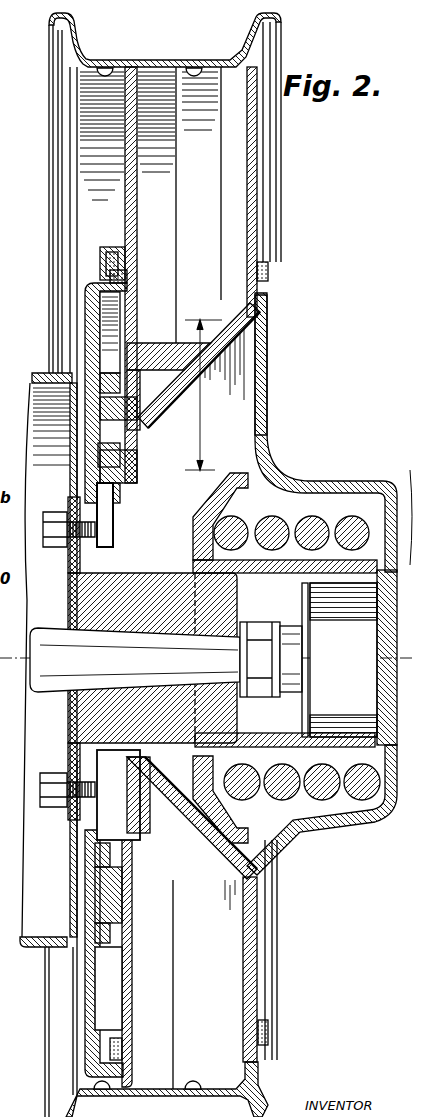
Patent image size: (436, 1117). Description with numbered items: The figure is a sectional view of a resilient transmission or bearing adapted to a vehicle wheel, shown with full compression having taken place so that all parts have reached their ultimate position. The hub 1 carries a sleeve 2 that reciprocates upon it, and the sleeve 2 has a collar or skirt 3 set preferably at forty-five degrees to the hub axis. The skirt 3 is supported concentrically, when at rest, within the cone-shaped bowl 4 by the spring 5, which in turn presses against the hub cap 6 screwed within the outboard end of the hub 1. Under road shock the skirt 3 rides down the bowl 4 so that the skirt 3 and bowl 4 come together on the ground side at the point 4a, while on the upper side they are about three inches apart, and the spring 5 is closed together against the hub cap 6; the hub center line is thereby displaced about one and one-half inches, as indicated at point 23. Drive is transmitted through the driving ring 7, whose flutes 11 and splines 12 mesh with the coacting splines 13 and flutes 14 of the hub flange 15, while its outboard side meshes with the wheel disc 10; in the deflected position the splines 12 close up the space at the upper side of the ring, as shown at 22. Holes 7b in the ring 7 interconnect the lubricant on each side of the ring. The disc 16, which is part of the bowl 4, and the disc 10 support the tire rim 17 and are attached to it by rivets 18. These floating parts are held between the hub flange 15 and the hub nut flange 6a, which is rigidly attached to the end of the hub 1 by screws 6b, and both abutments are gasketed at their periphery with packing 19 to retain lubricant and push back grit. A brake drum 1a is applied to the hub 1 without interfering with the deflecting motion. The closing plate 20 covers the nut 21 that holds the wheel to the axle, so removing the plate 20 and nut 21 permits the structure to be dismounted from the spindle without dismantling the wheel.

The hub 1 is at (174, 575).
The brake drum 1a is at (68, 553).
The sleeve 2 is at (272, 738).
The skirt 3 is at (212, 498).
The cone-shaped bowl 4 is at (222, 370).
The point of the bowl 4a is at (240, 302).
The spring 5 is at (312, 518).
The hub cap 6 is at (408, 498).
The hub nut flange 6a is at (263, 372).
The screws 6b is at (413, 537).
The driving ring 7 is at (124, 460).
The lubricant holes 7b is at (126, 476).
The wheel disc 10 is at (138, 190).
The flutes 11 is at (96, 862).
The splines 12 is at (108, 344).
The splines 13 is at (110, 532).
The flutes 14 is at (115, 497).
The hub flange 15 is at (85, 295).
The disc 16 is at (247, 187).
The tire rim 17 is at (156, 60).
The rivets 18 is at (104, 62).
The packing 19 is at (125, 268).
The closing plate 20 is at (399, 660).
The nut 21 is at (273, 668).
The closed-up space 22 is at (128, 283).
The center line offset point 23 is at (42, 655).